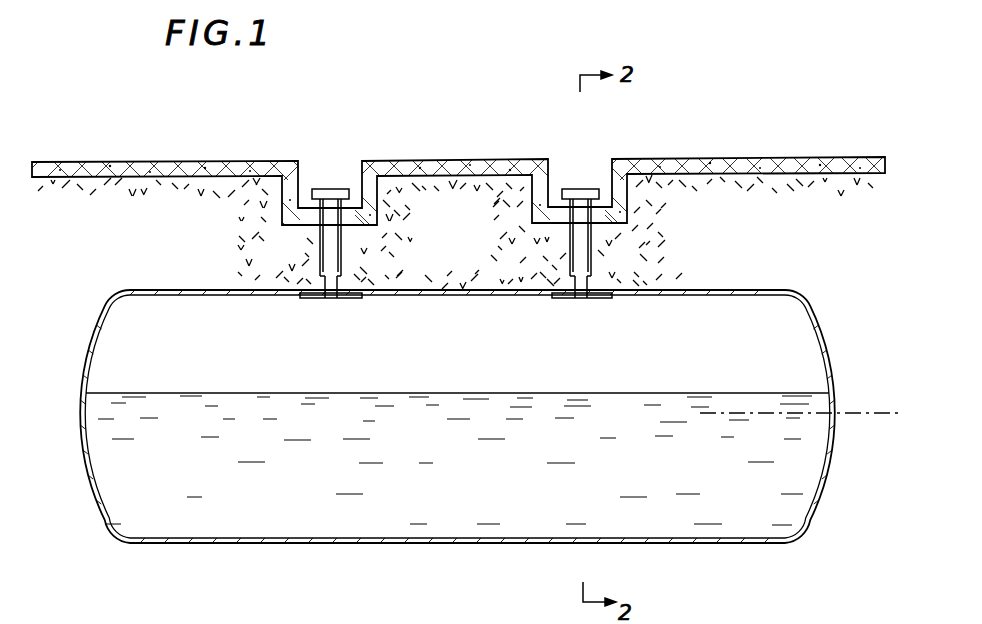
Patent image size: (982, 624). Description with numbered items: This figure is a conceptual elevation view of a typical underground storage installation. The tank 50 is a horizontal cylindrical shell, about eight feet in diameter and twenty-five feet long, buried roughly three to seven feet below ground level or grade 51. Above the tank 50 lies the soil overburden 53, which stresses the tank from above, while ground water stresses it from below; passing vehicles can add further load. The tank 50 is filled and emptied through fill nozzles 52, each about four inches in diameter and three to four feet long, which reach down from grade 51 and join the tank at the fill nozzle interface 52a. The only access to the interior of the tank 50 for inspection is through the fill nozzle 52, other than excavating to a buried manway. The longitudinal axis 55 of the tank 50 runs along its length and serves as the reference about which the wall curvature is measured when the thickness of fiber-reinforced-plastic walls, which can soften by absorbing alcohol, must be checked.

The tank 50 is at (93, 336).
The grade 51 is at (167, 165).
The fill nozzle 52 is at (572, 188).
The fill nozzle interface 52a is at (332, 305).
The soil overburden 53 is at (200, 243).
The longitudinal axis 55 is at (885, 415).